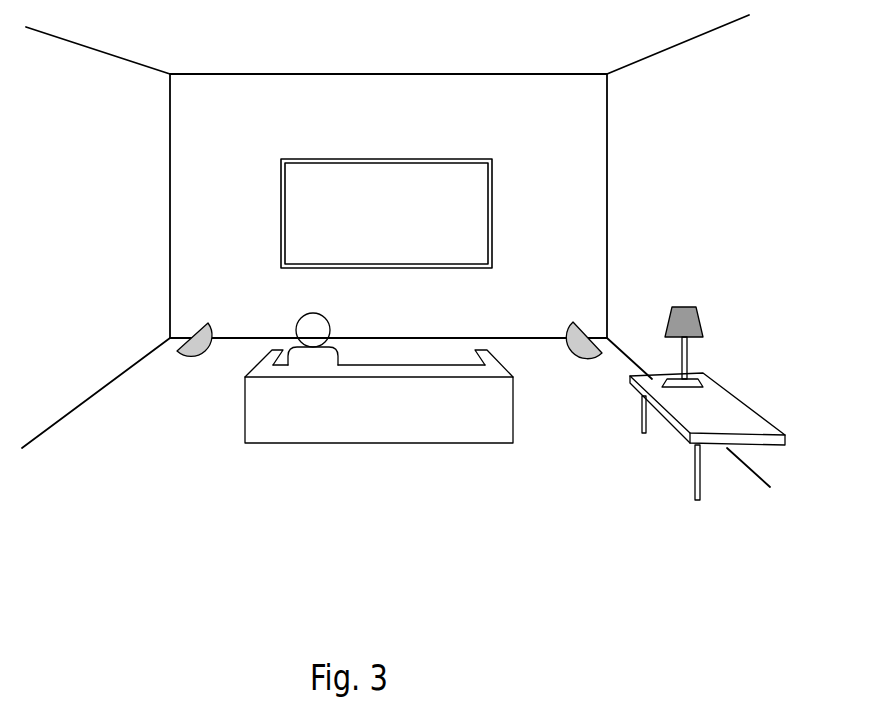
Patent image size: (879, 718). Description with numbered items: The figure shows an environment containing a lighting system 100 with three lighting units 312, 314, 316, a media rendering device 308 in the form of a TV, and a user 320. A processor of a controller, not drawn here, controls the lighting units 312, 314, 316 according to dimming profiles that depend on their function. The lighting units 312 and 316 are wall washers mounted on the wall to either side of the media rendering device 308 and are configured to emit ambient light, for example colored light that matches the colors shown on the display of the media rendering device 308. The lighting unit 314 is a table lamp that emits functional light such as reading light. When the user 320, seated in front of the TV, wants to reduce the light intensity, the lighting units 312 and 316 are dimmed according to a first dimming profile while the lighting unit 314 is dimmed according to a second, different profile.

The lighting system 100 is at (418, 534).
The media rendering device 308 is at (453, 225).
The lighting unit 312 is at (193, 356).
The lighting unit 314 is at (690, 323).
The lighting unit 316 is at (583, 350).
The user 320 is at (303, 358).